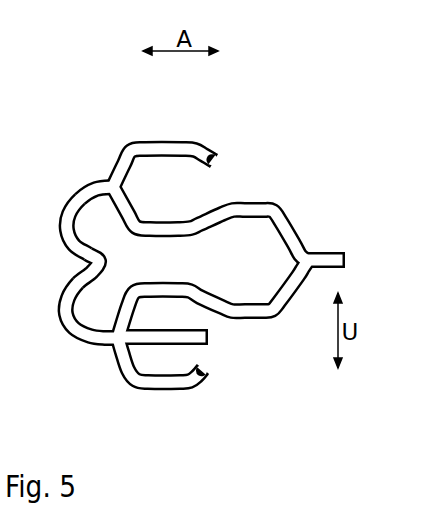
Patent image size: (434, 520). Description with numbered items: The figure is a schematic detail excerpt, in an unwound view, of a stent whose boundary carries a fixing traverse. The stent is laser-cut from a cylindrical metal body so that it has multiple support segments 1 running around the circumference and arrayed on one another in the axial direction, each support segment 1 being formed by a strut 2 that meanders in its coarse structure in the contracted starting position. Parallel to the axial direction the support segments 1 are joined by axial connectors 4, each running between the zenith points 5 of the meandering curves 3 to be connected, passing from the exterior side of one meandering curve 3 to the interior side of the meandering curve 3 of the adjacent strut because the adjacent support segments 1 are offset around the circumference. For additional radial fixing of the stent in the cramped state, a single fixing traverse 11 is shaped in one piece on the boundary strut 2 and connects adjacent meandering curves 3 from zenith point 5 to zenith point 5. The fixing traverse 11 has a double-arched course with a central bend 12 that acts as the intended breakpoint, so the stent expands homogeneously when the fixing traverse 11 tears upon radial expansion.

The support segment 1 is at (100, 414).
The strut 2 is at (285, 322).
The meandering curve 3 is at (144, 143).
The axial connector 4 is at (318, 253).
The zenith point 5 is at (102, 184).
The fixing traverse 11 is at (66, 223).
The central bend 12 is at (90, 262).